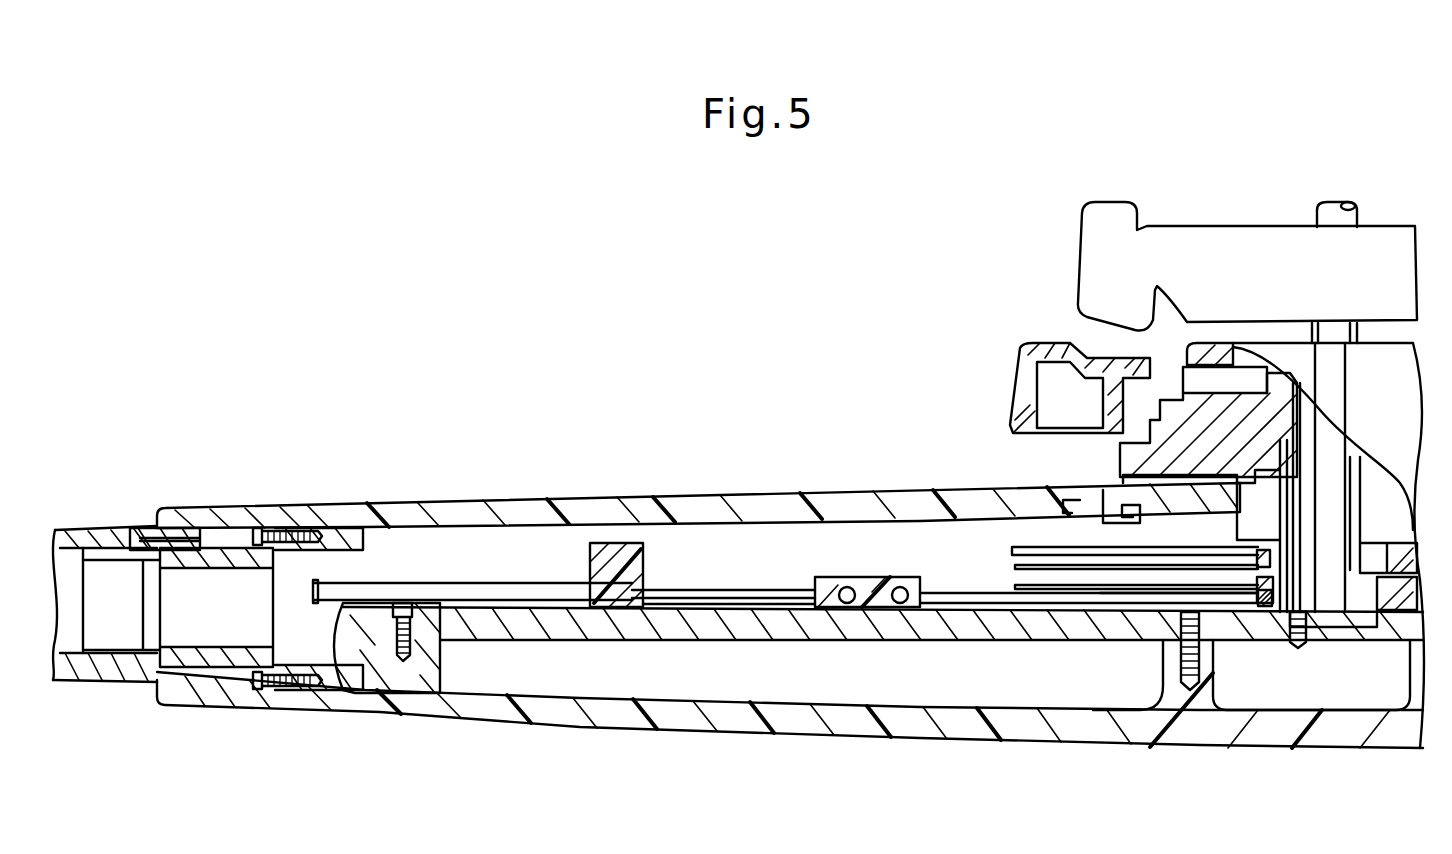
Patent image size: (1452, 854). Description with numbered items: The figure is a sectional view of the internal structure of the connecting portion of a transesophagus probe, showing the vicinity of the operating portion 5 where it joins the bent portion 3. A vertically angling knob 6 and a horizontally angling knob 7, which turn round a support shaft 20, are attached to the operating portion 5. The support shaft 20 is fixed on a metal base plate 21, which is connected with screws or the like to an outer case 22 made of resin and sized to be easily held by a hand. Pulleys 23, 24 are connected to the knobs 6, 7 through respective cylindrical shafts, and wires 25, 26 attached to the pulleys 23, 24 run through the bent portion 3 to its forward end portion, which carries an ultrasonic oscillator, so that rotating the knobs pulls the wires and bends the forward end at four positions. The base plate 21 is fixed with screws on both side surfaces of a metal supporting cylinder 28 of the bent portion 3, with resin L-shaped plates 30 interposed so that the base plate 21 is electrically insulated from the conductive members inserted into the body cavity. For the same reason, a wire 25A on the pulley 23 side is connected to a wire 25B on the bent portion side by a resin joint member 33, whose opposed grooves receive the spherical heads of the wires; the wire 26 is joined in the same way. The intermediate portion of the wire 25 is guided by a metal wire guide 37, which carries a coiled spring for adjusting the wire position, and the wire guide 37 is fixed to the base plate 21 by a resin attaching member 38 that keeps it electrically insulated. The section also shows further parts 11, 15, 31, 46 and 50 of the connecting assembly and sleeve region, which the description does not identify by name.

The bent portion 3 is at (113, 500).
The operating portion 5 is at (961, 326).
The vertically angling knob 6 is at (1043, 348).
The horizontally angling knob 7 is at (1118, 203).
The inner sleeve ring 11 is at (248, 542).
The screw 15 is at (182, 690).
The support shaft 20 is at (1323, 210).
The base plate 21 is at (482, 627).
The outer case 22 is at (713, 493).
The pulley 23 is at (1258, 612).
The pulley 24 is at (1258, 545).
The wire 25 is at (1118, 604).
The wire on the pulley side 25A is at (992, 604).
The wire on the bent portion side 25B is at (700, 600).
The wire 26 is at (1014, 549).
The supporting cylinder 28 is at (352, 528).
The L-shaped plate 30 is at (460, 660).
The set screw 31 is at (403, 605).
The joint member 33 is at (866, 578).
The wire guide 37 is at (537, 583).
The attaching member 38 is at (620, 550).
The collar 46 is at (138, 538).
The end sleeve 50 is at (100, 683).